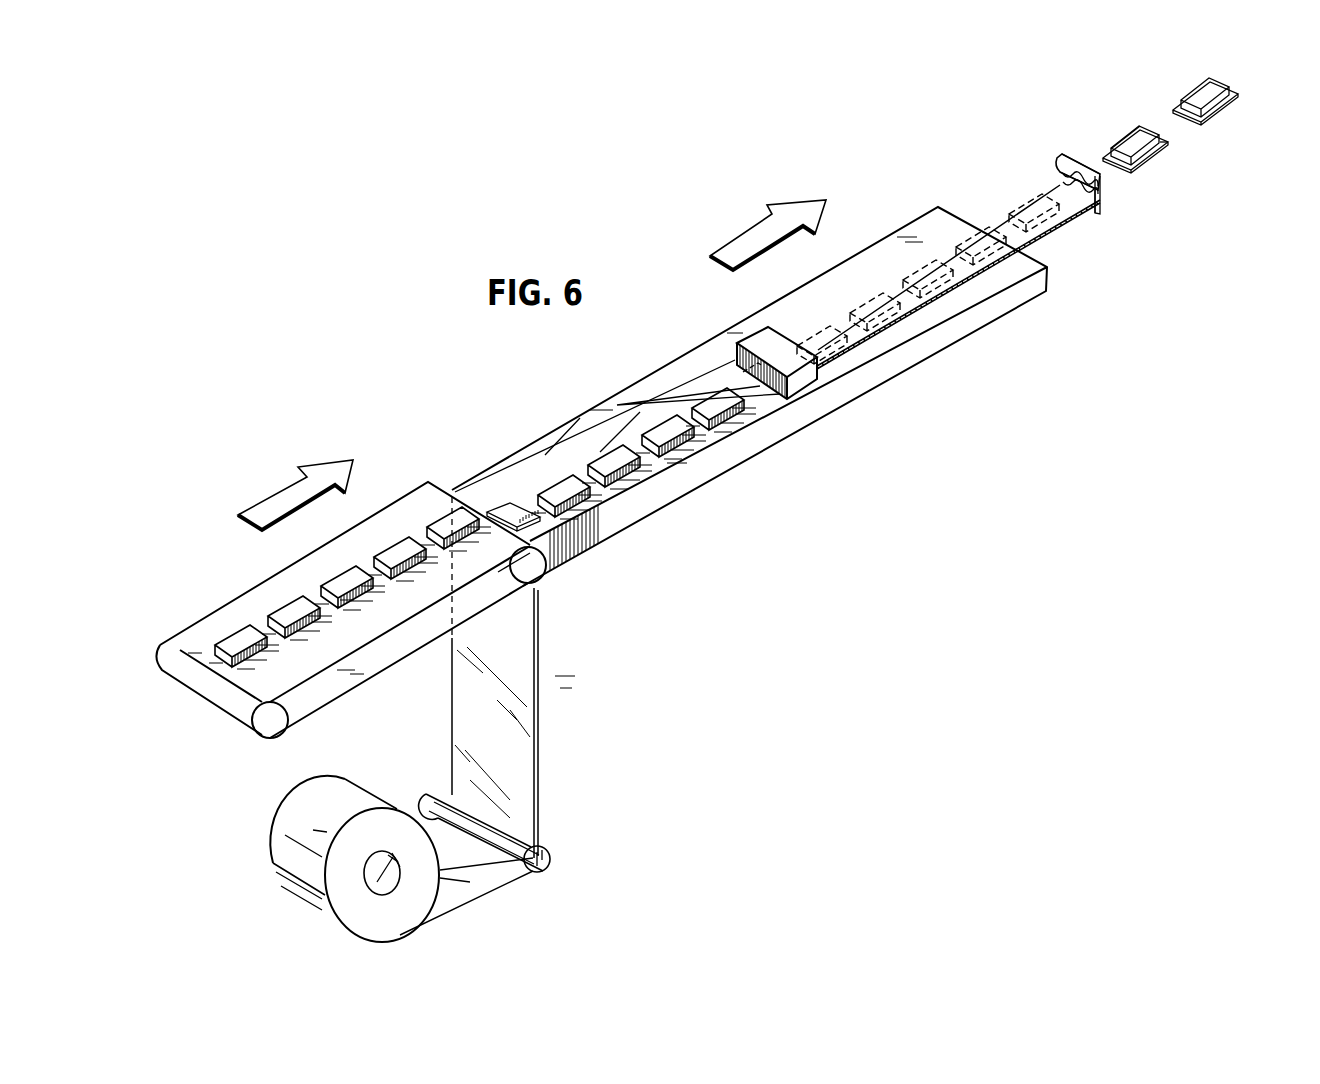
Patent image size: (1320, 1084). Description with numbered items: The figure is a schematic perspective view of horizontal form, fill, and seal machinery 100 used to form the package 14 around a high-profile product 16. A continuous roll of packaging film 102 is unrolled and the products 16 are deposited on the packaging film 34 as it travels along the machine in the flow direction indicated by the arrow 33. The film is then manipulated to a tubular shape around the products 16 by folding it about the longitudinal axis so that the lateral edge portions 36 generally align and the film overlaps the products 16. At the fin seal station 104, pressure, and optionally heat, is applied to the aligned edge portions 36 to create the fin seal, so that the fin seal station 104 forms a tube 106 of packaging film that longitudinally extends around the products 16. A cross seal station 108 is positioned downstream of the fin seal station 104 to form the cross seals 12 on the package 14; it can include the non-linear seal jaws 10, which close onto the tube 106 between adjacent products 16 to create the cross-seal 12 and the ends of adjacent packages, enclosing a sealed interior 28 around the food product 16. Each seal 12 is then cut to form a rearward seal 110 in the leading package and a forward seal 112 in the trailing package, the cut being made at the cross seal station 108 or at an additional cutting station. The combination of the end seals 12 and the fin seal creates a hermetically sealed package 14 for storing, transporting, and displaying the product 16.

The non-linear seal jaws 10 is at (1045, 160).
The seal 12 is at (1063, 155).
The package 14 is at (1140, 175).
The high-profile product 16 is at (297, 600).
The sealed interior 28 is at (1125, 132).
The direction of travel 33 is at (743, 230).
The packaging film 34 is at (533, 817).
The longitudinal edge portions 36 is at (452, 702).
The horizontal form, fill, and seal machinery 100 is at (935, 522).
The continuous roll of packaging film 102 is at (452, 925).
The fin seal station 104 is at (763, 338).
The tube 106 is at (850, 328).
The cross seal station 108 is at (1098, 210).
The rearward seal 110 is at (1104, 190).
The forward seal 112 is at (1162, 140).